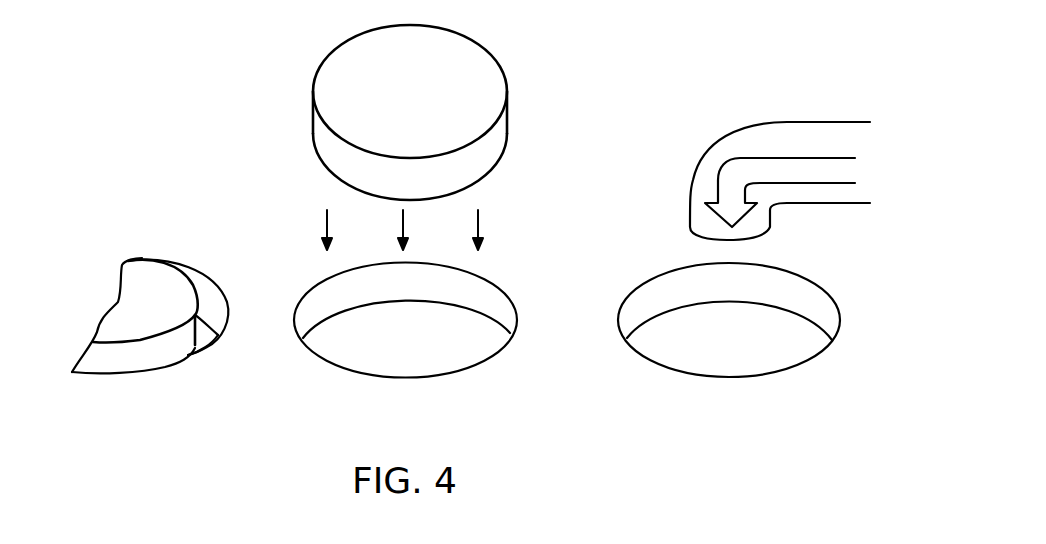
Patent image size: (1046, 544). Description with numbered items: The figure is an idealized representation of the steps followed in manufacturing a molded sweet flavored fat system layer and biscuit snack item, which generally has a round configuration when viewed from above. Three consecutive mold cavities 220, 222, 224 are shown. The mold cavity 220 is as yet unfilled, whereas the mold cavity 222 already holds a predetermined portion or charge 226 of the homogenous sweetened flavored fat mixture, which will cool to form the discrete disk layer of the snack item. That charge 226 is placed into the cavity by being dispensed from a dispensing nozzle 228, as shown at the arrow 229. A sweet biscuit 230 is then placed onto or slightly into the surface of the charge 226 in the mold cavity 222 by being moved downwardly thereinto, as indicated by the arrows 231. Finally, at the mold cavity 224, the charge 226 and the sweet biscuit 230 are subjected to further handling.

The mold cavity 220 is at (780, 377).
The mold cavity 222 is at (402, 383).
The mold cavity 224 is at (127, 380).
The charge 226 is at (433, 341).
The dispensing nozzle 228 is at (825, 217).
The arrow 229 is at (767, 167).
The sweet biscuit 230 is at (442, 82).
The arrow 231 is at (483, 226).